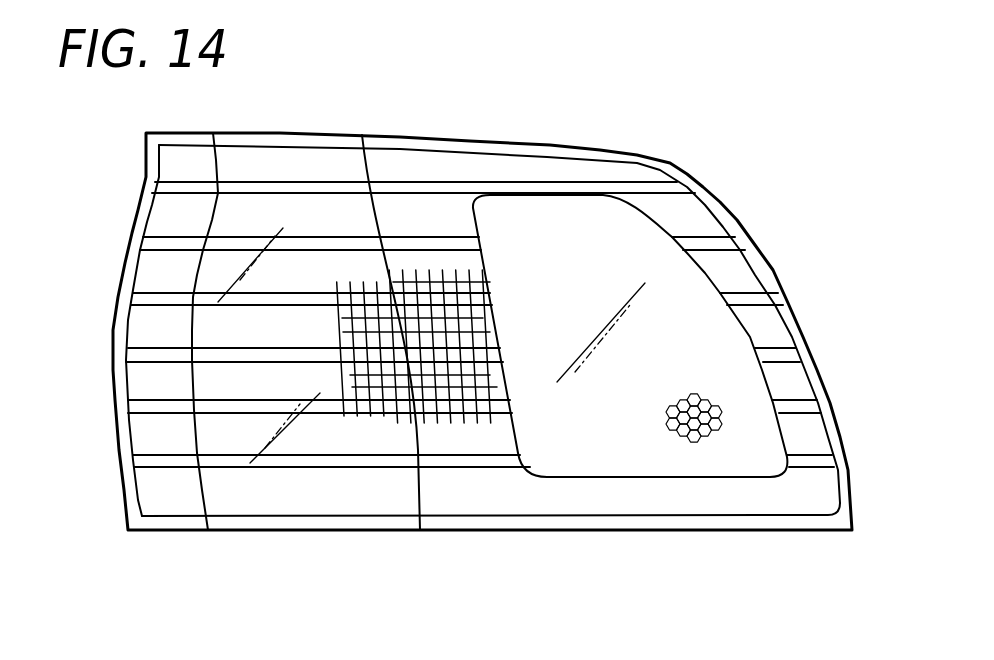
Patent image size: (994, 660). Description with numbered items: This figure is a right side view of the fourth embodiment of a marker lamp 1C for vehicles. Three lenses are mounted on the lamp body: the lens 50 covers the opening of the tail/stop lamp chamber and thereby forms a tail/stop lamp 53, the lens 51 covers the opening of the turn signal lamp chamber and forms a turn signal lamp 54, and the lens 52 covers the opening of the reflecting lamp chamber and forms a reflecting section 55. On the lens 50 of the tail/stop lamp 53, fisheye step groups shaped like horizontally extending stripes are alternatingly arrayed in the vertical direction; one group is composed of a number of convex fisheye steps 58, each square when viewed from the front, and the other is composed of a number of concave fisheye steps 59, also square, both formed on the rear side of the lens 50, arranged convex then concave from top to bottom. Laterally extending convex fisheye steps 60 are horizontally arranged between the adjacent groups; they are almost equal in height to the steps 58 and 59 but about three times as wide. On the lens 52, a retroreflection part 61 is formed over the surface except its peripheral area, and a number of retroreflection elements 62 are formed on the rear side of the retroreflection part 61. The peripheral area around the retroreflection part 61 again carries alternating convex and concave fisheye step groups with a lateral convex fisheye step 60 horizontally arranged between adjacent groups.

The marker lamp 1C is at (786, 55).
The lens 50 is at (177, 167).
The lens 51 is at (343, 153).
The lens 52 is at (480, 158).
The tail/stop lamp 53 is at (148, 437).
The turn signal lamp 54 is at (341, 587).
The reflecting section 55 is at (423, 160).
The convex fisheye step 58 is at (448, 484).
The concave fisheye step 59 is at (551, 196).
The convex fisheye step 60 is at (450, 412).
The retroreflection part 61 is at (545, 205).
The retroreflection element 62 is at (778, 452).